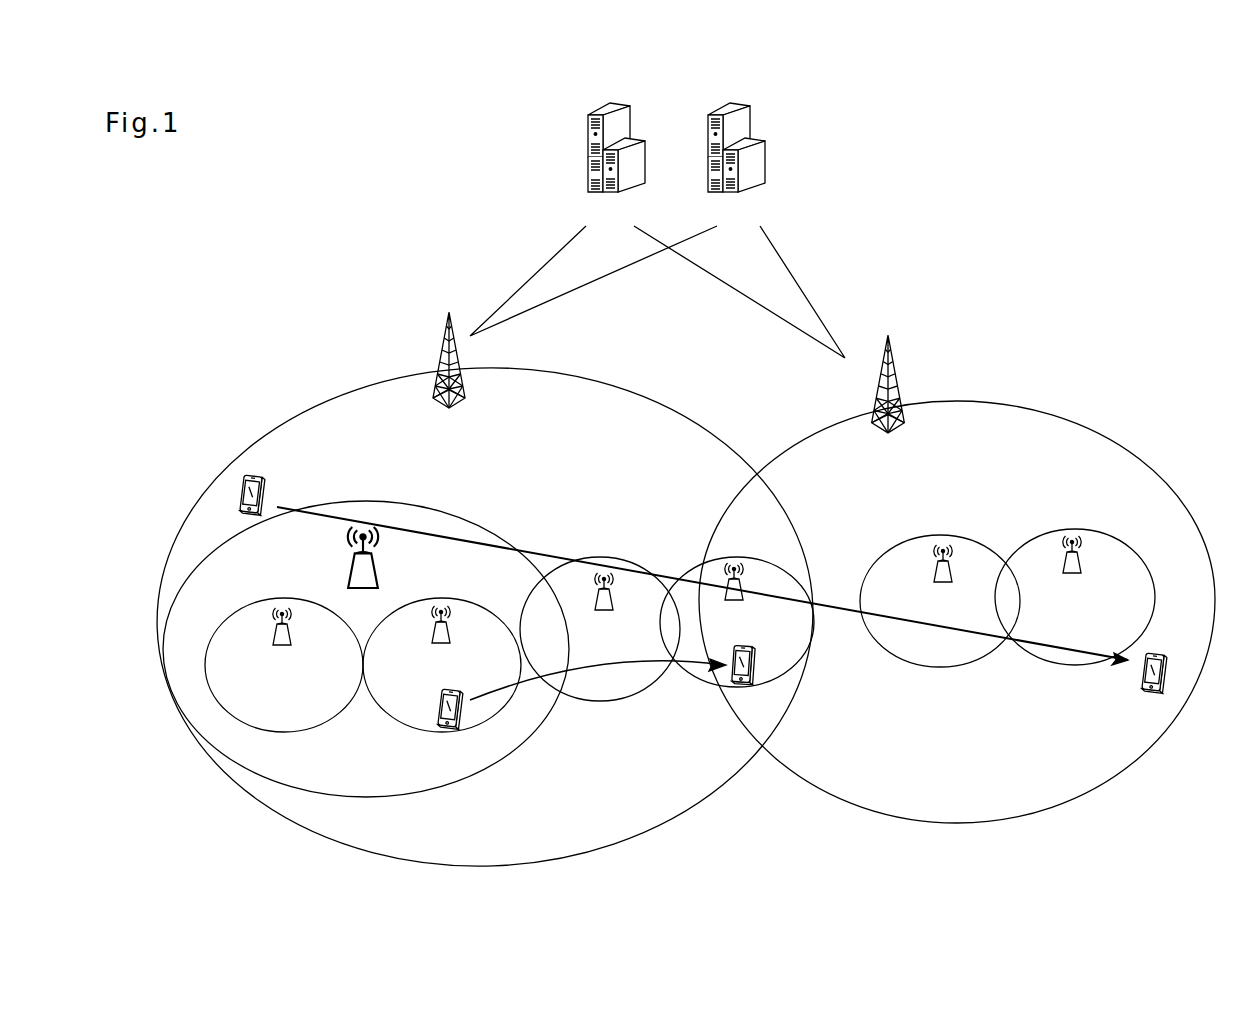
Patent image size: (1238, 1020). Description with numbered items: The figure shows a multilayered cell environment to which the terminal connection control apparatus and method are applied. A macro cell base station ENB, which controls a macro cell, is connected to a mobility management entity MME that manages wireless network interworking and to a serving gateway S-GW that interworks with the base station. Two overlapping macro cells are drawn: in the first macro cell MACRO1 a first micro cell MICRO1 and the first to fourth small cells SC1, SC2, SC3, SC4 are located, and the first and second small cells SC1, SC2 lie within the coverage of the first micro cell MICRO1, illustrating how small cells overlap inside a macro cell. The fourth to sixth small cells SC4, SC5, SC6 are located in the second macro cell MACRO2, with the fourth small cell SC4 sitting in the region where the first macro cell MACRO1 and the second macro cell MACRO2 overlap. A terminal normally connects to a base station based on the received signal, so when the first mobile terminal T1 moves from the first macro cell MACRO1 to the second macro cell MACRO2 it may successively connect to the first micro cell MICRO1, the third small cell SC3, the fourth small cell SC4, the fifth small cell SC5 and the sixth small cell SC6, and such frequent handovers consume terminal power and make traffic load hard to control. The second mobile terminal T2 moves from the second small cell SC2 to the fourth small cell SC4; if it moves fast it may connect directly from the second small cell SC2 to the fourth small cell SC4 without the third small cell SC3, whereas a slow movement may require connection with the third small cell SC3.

The mobility management entity MME is at (616, 163).
The serving gateway S-GW is at (736, 163).
The macro cell base station ENB is at (668, 389).
The first macro cell MACRO1 is at (485, 617).
The second macro cell MACRO2 is at (957, 612).
The first micro cell MICRO1 is at (366, 649).
The first small cell SC1 is at (284, 665).
The second small cell SC2 is at (442, 665).
The third small cell SC3 is at (600, 629).
The fourth small cell SC4 is at (737, 622).
The fifth small cell SC5 is at (940, 601).
The sixth small cell SC6 is at (1075, 597).
The first mobile terminal T1 is at (703, 584).
The second mobile terminal T2 is at (596, 687).